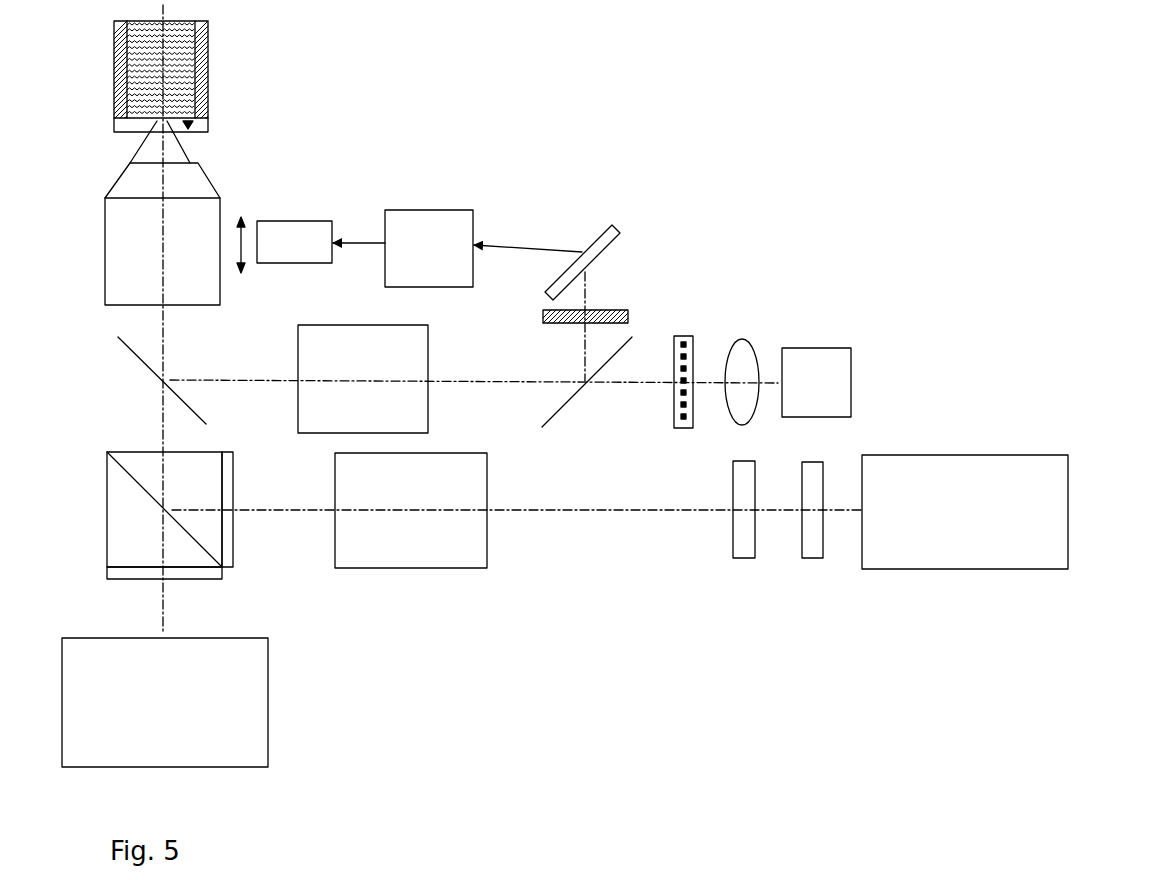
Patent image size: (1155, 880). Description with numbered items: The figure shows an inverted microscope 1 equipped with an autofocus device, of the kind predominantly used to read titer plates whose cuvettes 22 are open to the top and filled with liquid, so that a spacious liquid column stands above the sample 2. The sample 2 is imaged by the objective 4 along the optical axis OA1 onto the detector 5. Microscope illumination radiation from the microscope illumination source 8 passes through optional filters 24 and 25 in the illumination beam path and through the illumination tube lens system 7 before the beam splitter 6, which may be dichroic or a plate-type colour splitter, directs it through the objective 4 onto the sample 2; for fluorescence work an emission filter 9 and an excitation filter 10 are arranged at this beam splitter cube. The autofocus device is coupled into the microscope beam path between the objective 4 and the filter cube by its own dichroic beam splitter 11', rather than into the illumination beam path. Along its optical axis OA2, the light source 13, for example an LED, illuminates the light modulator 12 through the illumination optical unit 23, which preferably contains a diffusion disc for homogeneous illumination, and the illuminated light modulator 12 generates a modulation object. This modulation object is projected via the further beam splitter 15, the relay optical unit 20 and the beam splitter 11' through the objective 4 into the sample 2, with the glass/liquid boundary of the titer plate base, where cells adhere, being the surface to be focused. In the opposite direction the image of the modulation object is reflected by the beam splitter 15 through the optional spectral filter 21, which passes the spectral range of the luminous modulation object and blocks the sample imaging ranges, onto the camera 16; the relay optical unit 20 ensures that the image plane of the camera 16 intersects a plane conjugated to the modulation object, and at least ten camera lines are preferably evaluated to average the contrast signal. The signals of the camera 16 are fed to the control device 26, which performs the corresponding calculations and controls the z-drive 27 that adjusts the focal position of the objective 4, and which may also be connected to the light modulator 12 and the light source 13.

The microscope 1 is at (410, 630).
The sample 2 is at (190, 125).
The objective 4 is at (105, 237).
The detector 5 is at (268, 705).
The beam splitter 6 is at (107, 540).
The illumination tube lens system 7 is at (487, 545).
The microscope illumination source 8 is at (1068, 468).
The emission filter 9 is at (123, 579).
The excitation filter 10 is at (233, 538).
The dichroic beam splitter 11' is at (127, 373).
The light modulator 12 is at (683, 335).
The light source 13 is at (826, 348).
The beam splitter 15 is at (558, 400).
The camera 16 is at (617, 238).
The relay optical unit 20 is at (297, 352).
The spectral filter 21 is at (600, 310).
The cuvette 22 is at (114, 85).
The illumination optical unit 23 is at (734, 421).
The filter 24 is at (733, 535).
The filter 25 is at (802, 473).
The control device 26 is at (466, 210).
The z-drive 27 is at (303, 216).
The first optical axis OA1 is at (165, 331).
The optical axis OA2 is at (252, 385).